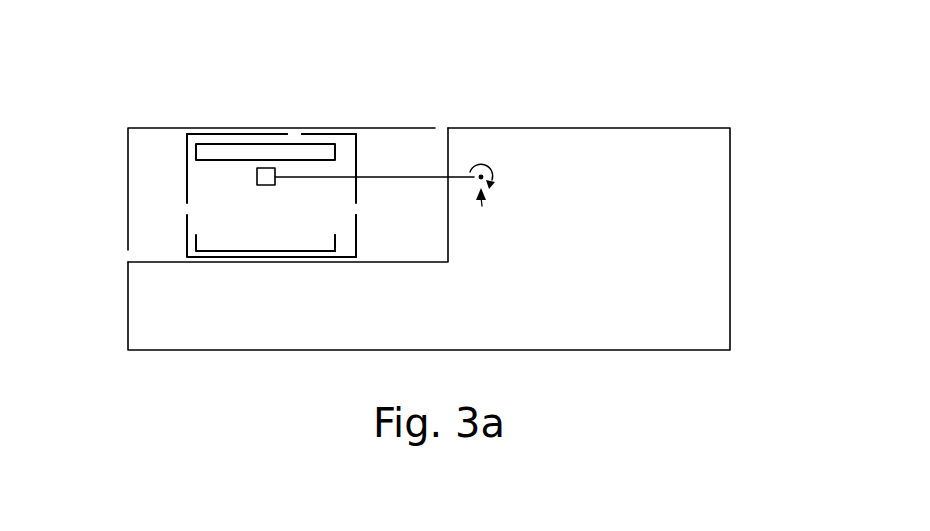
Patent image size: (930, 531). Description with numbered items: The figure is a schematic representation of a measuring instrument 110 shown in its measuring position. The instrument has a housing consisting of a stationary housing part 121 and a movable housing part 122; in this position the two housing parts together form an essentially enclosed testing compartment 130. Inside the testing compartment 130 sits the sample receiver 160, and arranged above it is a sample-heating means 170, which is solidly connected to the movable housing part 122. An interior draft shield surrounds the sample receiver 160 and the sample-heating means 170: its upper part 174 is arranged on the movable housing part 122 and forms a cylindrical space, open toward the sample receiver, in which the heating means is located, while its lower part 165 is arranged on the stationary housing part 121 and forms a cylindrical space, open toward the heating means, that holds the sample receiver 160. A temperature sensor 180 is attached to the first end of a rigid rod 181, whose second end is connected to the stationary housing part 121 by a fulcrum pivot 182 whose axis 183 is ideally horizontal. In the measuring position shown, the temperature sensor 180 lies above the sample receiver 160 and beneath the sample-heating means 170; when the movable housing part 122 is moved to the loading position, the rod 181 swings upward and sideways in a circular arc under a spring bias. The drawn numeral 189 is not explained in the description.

The sensor device 110 is at (760, 52).
The first housing portion 121 is at (128, 167).
The second housing portion 122 is at (730, 217).
The circuit board outline 130 is at (222, 222).
The lower conductor element 160 is at (277, 251).
The conductor end portion 165 is at (331, 253).
The upper conductor element 170 is at (235, 152).
The top edge segments 174 is at (191, 133).
The feed point 180 is at (260, 168).
The feed line 181 is at (338, 176).
The pivot axis 182 is at (482, 155).
The rotation direction arrow 183 is at (482, 204).
The side edge segment 189 is at (335, 228).